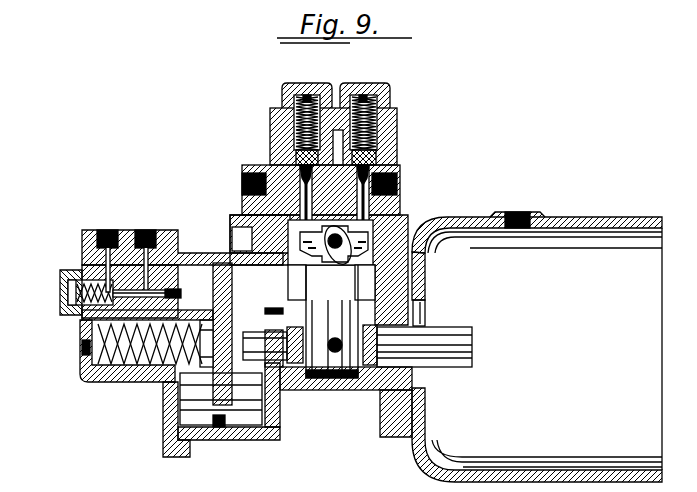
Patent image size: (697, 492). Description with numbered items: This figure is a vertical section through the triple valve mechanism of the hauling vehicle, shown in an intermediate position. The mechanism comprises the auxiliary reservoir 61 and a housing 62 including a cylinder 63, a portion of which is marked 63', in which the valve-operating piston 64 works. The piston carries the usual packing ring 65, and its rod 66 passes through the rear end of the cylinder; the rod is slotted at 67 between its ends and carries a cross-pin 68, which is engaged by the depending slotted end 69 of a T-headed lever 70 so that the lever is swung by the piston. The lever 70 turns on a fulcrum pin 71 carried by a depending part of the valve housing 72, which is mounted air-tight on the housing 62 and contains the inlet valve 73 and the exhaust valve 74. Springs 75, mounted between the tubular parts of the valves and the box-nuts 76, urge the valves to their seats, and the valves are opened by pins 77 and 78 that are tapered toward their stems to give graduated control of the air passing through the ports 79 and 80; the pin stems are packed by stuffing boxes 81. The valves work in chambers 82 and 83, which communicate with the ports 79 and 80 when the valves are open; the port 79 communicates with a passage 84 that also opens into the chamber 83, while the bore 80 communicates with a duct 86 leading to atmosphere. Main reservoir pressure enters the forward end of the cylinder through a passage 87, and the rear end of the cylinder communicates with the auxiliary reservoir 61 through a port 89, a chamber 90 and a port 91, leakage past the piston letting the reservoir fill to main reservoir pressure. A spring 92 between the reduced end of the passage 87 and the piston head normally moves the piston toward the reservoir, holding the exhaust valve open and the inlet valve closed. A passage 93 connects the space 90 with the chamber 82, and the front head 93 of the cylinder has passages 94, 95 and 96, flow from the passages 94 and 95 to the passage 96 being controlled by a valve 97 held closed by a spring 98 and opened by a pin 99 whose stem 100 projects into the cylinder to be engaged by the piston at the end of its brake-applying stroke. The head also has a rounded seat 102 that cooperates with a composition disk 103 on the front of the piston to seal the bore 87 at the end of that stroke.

The auxiliary reservoir 61 is at (575, 216).
The housing 62 is at (315, 392).
The cylinder 63 is at (273, 413).
The spring housing 63' is at (119, 360).
The valve-operating piston 64 is at (245, 442).
The packing ring 65 is at (216, 440).
The rod 66 is at (287, 393).
The slot 67 is at (356, 320).
The cross-pin 68 is at (325, 330).
The depending slotted end 69 is at (352, 300).
The T-headed lever 70 is at (318, 278).
The fulcrum pin 71 is at (385, 265).
The valve housing 72 is at (398, 124).
The inlet valve 73 is at (298, 158).
The exhaust valve 74 is at (378, 158).
The springs 75 is at (282, 110).
The box-nuts 76 is at (298, 95).
The operating pin 77 is at (278, 222).
The operating pin 78 is at (386, 170).
The port 79 is at (272, 170).
The port 80 is at (372, 190).
The stuffing boxes 81 is at (365, 232).
The chamber 82 is at (294, 132).
The chamber 83 is at (392, 142).
The passage 84 is at (242, 186).
The duct 86 is at (398, 184).
The passage 87 is at (82, 346).
The port 89 is at (272, 312).
The chamber 90 is at (378, 380).
The port 91 is at (426, 308).
The spring 92 is at (120, 380).
The passage 93 is at (332, 258).
The passage 94 is at (100, 242).
The passage 95 is at (112, 232).
The passage 96 is at (148, 232).
The valve 97 is at (82, 325).
The spring 98 is at (60, 300).
The pin 99 is at (175, 250).
The stem 100 is at (185, 262).
The rounded seat 102 is at (162, 384).
The composition disk 103 is at (200, 366).